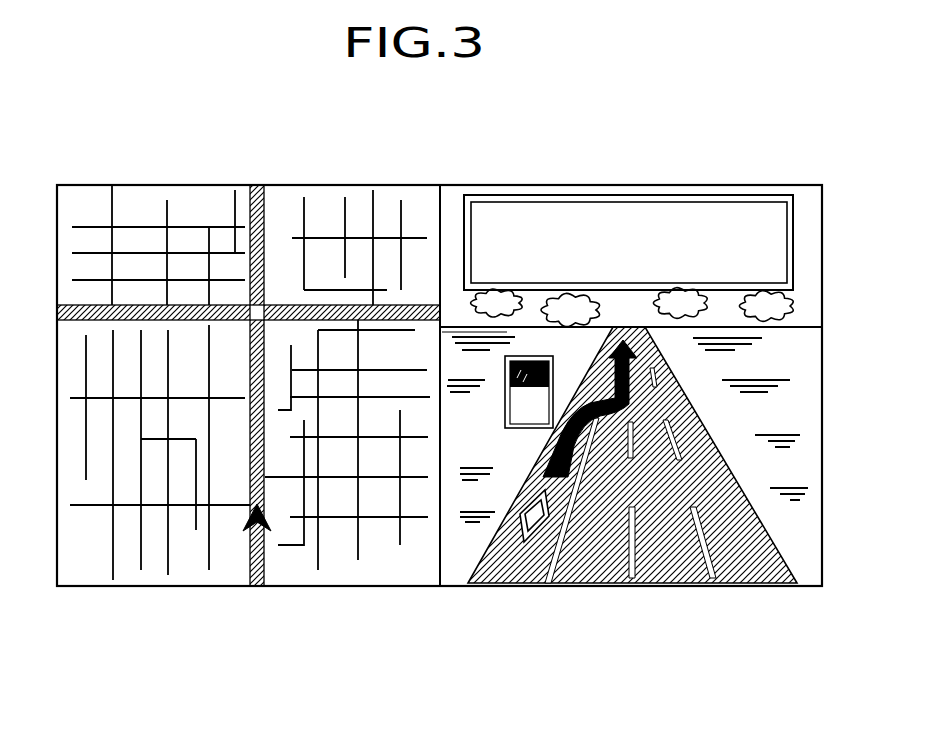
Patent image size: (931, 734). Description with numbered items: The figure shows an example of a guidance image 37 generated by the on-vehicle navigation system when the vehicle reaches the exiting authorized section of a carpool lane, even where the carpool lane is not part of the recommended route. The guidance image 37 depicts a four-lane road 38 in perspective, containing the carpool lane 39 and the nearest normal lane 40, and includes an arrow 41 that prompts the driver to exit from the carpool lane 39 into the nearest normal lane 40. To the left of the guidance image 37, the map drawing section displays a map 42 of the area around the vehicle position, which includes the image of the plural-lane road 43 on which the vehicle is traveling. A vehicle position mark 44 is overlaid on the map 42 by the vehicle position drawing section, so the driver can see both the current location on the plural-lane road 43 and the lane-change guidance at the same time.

The guidance image 37 is at (648, 185).
The four-lane road 38 is at (468, 585).
The carpool lane 39 is at (510, 584).
The nearest normal lane 40 is at (588, 584).
The arrow 41 is at (546, 462).
The map 42 is at (228, 185).
The plural-lane road 43 is at (248, 545).
The vehicle position mark 44 is at (264, 525).